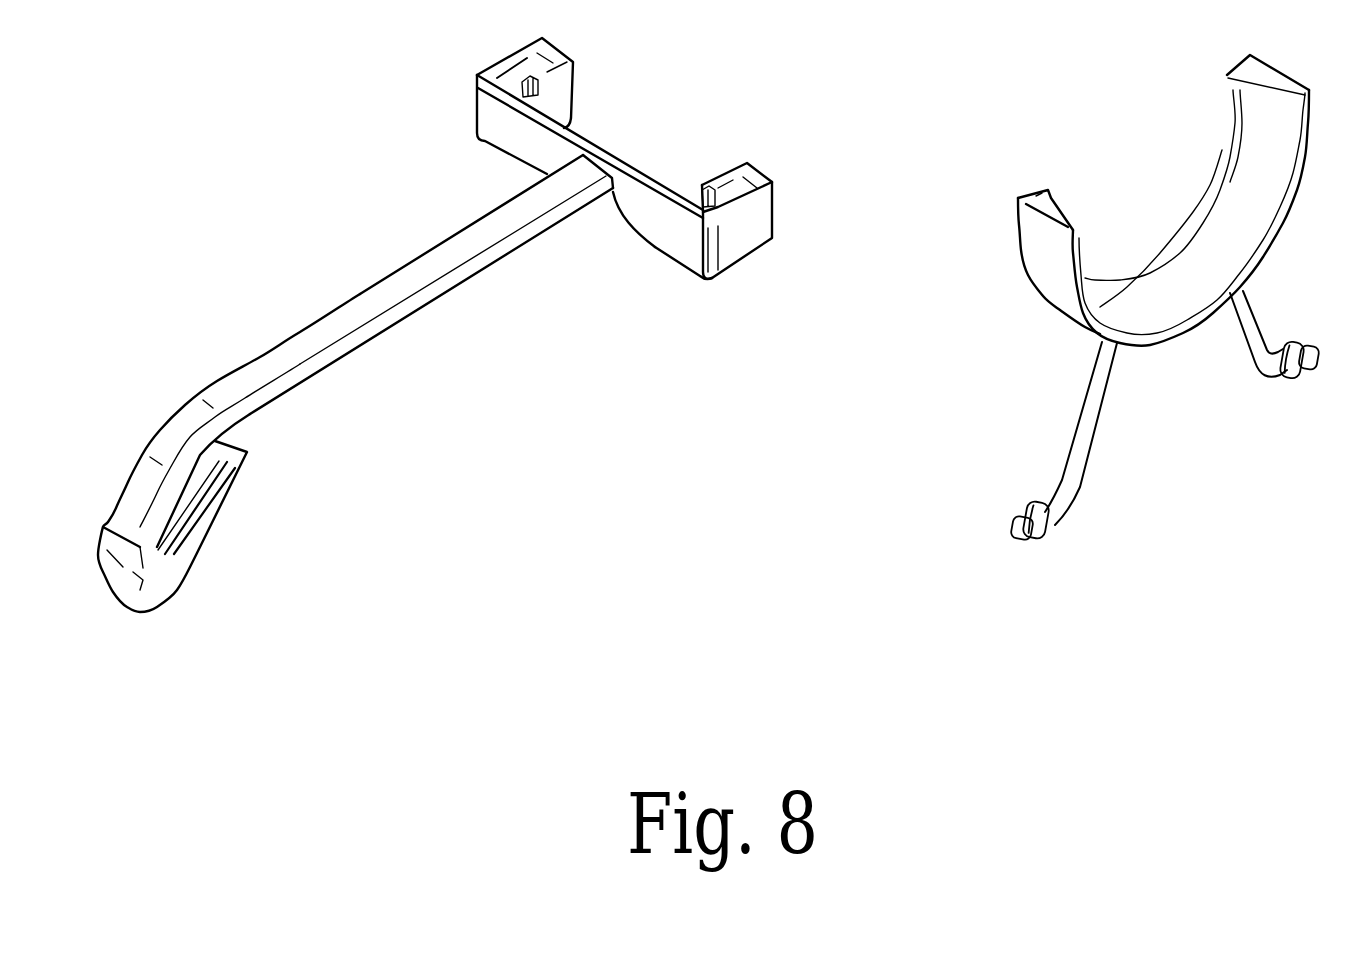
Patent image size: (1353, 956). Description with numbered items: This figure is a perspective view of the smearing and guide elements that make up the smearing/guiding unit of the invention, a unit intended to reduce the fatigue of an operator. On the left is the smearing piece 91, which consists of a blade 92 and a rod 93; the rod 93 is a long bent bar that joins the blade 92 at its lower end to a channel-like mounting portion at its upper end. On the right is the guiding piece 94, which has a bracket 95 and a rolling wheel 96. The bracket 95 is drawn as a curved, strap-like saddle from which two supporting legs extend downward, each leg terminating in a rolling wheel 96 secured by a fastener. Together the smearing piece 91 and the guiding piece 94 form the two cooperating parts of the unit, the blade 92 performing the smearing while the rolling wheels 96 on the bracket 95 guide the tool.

The smearing piece 91 is at (510, 375).
The blade 92 is at (203, 553).
The rod 93 is at (400, 263).
The guiding piece 94 is at (1163, 200).
The bracket 95 is at (1082, 408).
The rolling wheel 96 is at (1305, 380).